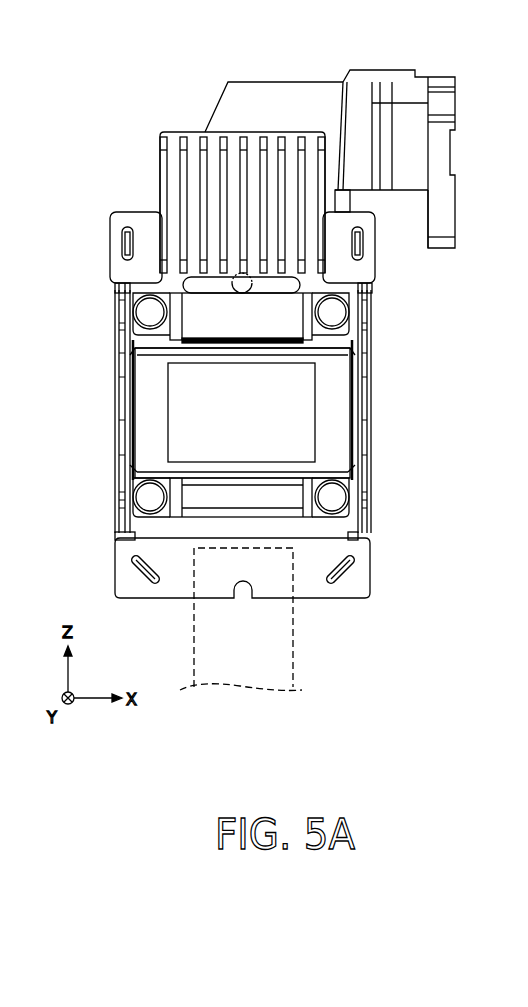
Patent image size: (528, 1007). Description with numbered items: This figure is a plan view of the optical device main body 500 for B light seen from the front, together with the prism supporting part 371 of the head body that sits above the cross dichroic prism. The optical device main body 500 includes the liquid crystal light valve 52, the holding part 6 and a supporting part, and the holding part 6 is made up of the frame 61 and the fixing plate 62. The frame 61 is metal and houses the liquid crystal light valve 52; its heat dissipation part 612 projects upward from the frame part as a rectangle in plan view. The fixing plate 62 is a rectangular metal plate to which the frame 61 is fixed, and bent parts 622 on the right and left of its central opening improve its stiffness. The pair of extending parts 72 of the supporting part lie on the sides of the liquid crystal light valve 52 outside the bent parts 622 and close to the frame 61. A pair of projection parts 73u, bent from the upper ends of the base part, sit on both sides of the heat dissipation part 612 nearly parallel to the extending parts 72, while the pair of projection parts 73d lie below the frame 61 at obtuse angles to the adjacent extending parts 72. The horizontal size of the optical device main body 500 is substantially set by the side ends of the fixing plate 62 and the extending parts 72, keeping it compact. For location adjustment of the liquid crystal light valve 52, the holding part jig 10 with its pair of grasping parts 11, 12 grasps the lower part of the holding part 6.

The optical device main body 500 is at (415, 325).
The prism supporting part 371 is at (225, 101).
The heat dissipation part 612 is at (170, 178).
The projection parts 73u is at (122, 241).
The bent parts 622 is at (130, 366).
The extending parts 72 is at (122, 405).
The liquid crystal light valve 52 is at (185, 432).
The holding part 6 is at (440, 505).
The frame 61 is at (363, 507).
The fixing plate 62 is at (358, 550).
The projection parts 73d is at (135, 571).
The grasping part 11 is at (293, 619).
The grasping part 12 is at (293, 619).
The holding part jig 10 is at (293, 640).